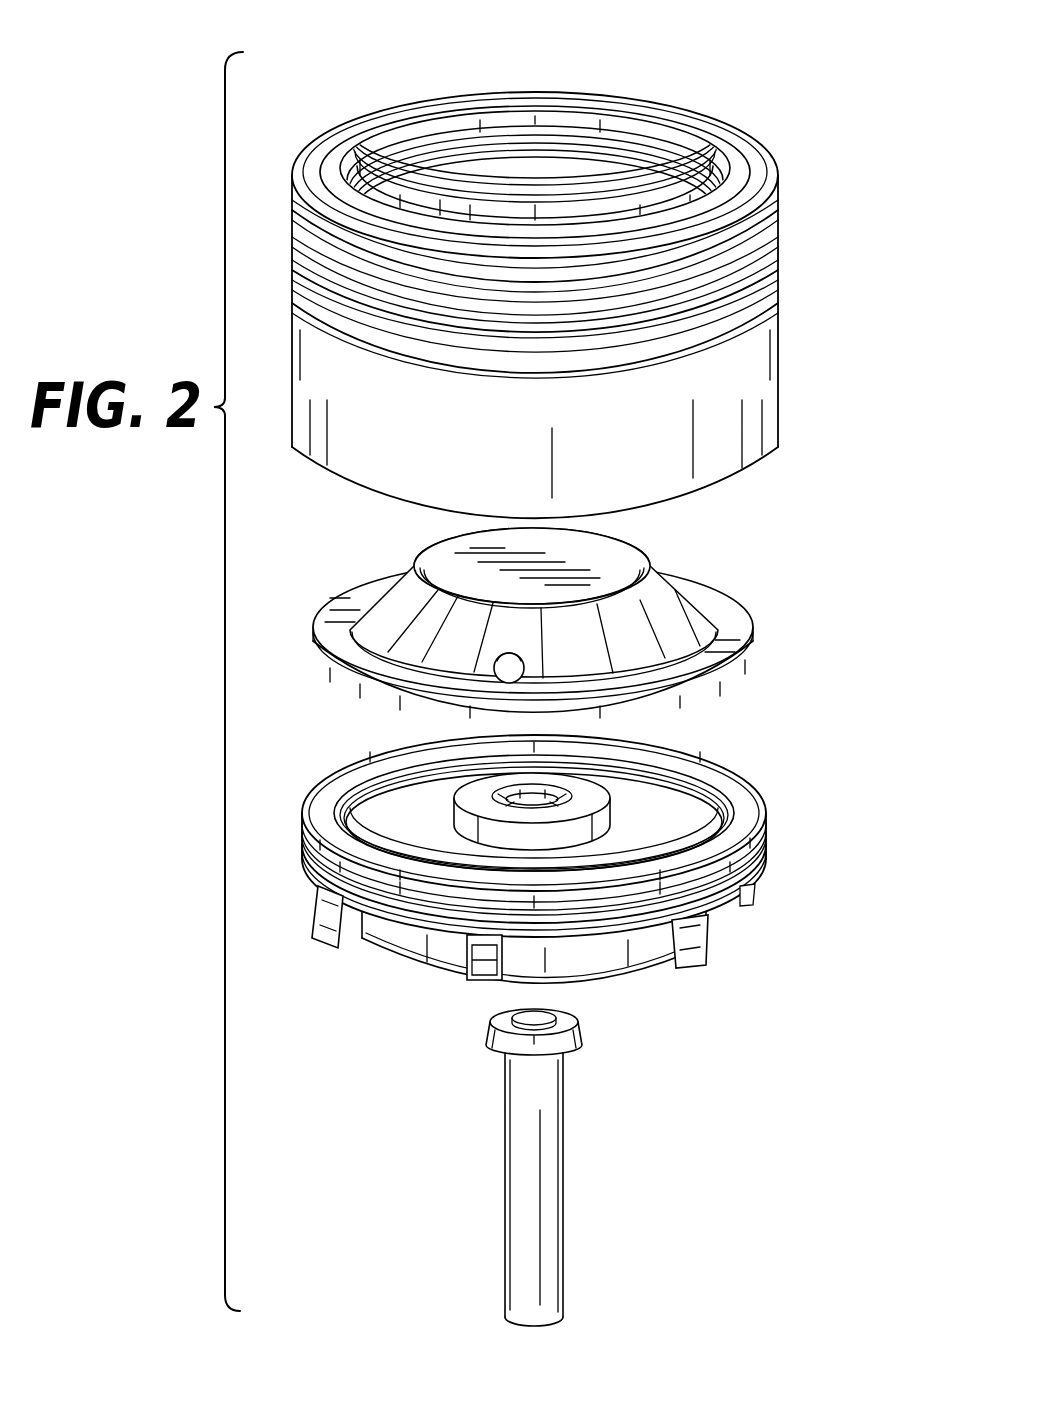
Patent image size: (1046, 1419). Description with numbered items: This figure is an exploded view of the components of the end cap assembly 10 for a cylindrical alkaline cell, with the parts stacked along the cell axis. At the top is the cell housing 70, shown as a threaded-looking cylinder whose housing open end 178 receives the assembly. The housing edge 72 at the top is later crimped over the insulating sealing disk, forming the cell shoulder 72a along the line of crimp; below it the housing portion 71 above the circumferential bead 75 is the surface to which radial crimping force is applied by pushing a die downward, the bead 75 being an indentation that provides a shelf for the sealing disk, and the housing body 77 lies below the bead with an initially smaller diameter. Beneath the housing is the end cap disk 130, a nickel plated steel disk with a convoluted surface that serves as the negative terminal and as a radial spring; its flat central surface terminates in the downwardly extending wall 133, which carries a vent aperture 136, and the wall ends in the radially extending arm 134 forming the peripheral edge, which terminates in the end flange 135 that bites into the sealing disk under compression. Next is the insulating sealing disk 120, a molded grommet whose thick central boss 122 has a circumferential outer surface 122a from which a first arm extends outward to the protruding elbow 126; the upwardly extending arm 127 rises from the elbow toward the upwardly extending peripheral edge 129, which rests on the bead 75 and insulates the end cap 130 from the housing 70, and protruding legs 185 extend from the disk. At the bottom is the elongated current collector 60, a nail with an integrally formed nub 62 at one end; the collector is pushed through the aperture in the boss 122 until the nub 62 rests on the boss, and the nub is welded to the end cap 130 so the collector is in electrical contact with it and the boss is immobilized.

The end cap assembly 10 is at (794, 92).
The cell housing 70 is at (768, 387).
The housing edge 72 is at (336, 158).
The cell shoulder 72a is at (760, 177).
The housing open end 178 is at (580, 117).
The housing portion above bead 71 is at (770, 218).
The circumferential bead 75 is at (774, 268).
The housing body 77 is at (762, 310).
The end cap disk 130 is at (612, 555).
The downwardly extending wall 133 is at (676, 608).
The radially extending arm 134 is at (742, 614).
The end flange 135 is at (757, 653).
The vent aperture 136 is at (494, 673).
The insulating sealing disk 120 is at (748, 808).
The central boss 122 is at (585, 790).
The circumferential outer surface of boss 122a is at (455, 806).
The peripheral edge of insulating sealing disk 129 is at (742, 841).
The upwardly extending arm 127 is at (385, 940).
The protruding elbow 126 is at (407, 970).
The protruding legs 185 is at (320, 940).
The nub 62 is at (577, 1042).
The current collector 60 is at (550, 1186).